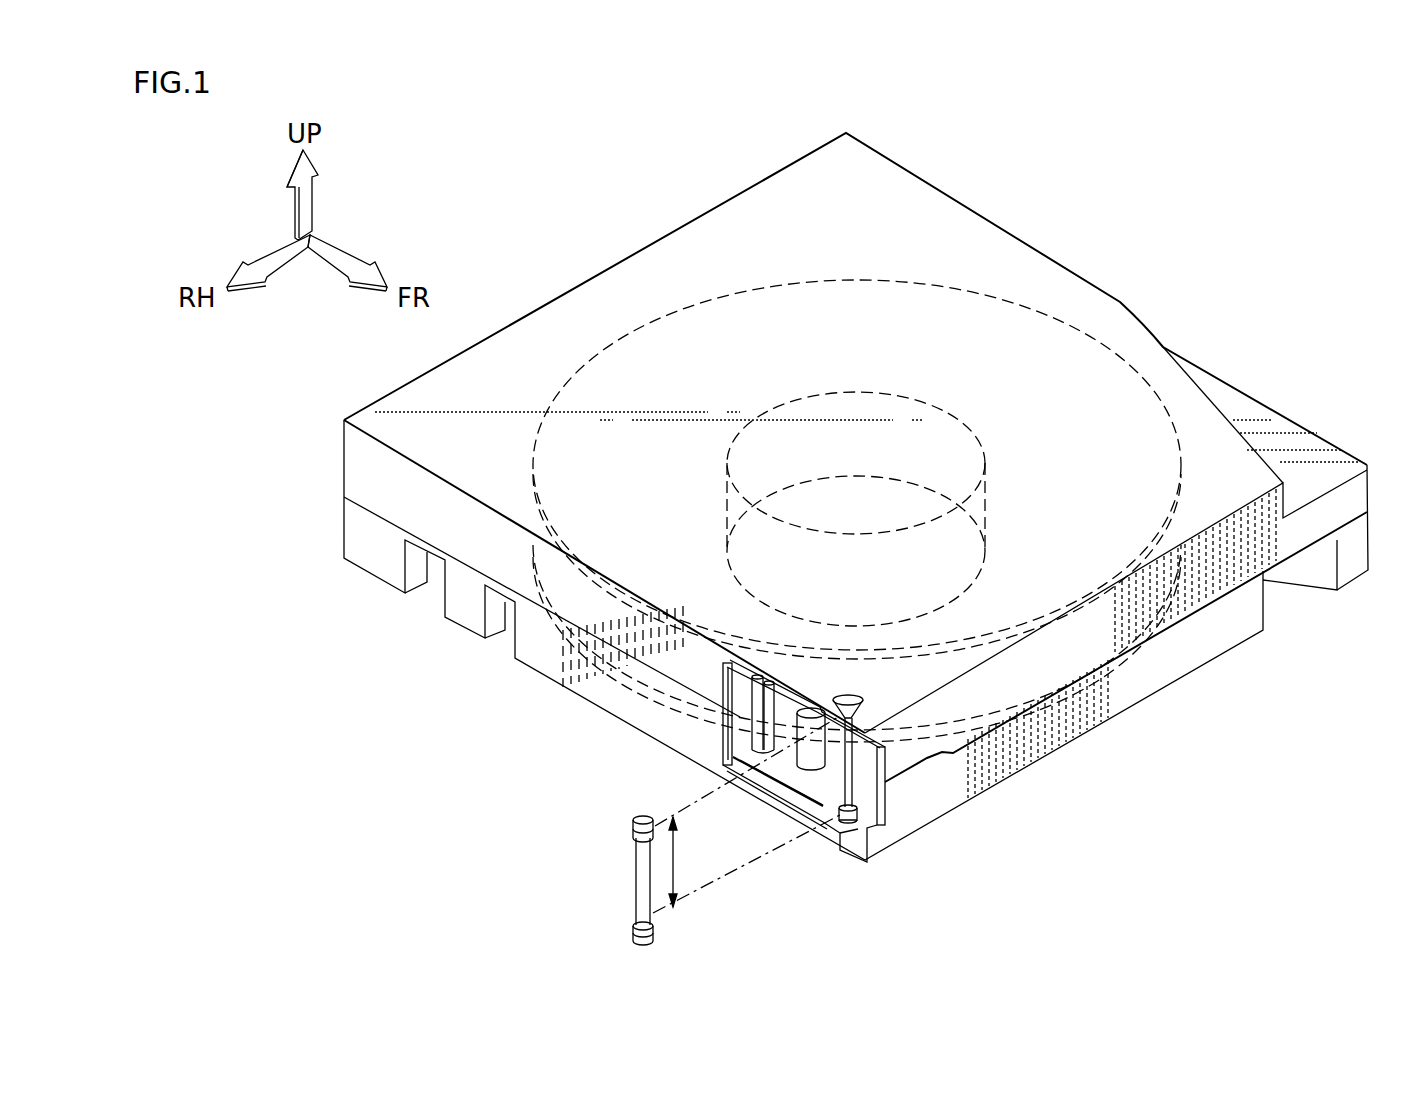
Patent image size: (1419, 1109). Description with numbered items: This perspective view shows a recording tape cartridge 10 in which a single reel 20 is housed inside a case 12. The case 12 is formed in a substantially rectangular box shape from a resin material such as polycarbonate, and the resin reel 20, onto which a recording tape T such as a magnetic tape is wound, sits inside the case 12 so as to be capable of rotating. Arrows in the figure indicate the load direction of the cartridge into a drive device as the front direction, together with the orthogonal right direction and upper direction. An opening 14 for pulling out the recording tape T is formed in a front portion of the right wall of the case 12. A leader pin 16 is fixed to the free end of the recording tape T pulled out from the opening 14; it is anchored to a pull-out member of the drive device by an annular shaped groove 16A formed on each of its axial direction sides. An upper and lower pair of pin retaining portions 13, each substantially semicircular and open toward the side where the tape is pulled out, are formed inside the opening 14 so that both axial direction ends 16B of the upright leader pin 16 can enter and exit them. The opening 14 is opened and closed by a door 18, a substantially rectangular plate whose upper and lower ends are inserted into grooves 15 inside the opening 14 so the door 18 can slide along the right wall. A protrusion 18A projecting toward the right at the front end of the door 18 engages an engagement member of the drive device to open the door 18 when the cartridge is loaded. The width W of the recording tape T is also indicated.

The recording tape cartridge 10 is at (1033, 212).
The case 12 is at (702, 248).
The pin retaining portion 13 is at (843, 697).
The opening 14 is at (817, 785).
The groove 15 is at (815, 787).
The leader pin 16 is at (643, 856).
The annular shaped groove 16A is at (635, 836).
The axial direction end 16B is at (638, 817).
The door 18 is at (725, 737).
The protrusion 18A is at (720, 665).
The reel 20 is at (867, 280).
The width W is at (676, 862).
The recording tape T is at (707, 890).